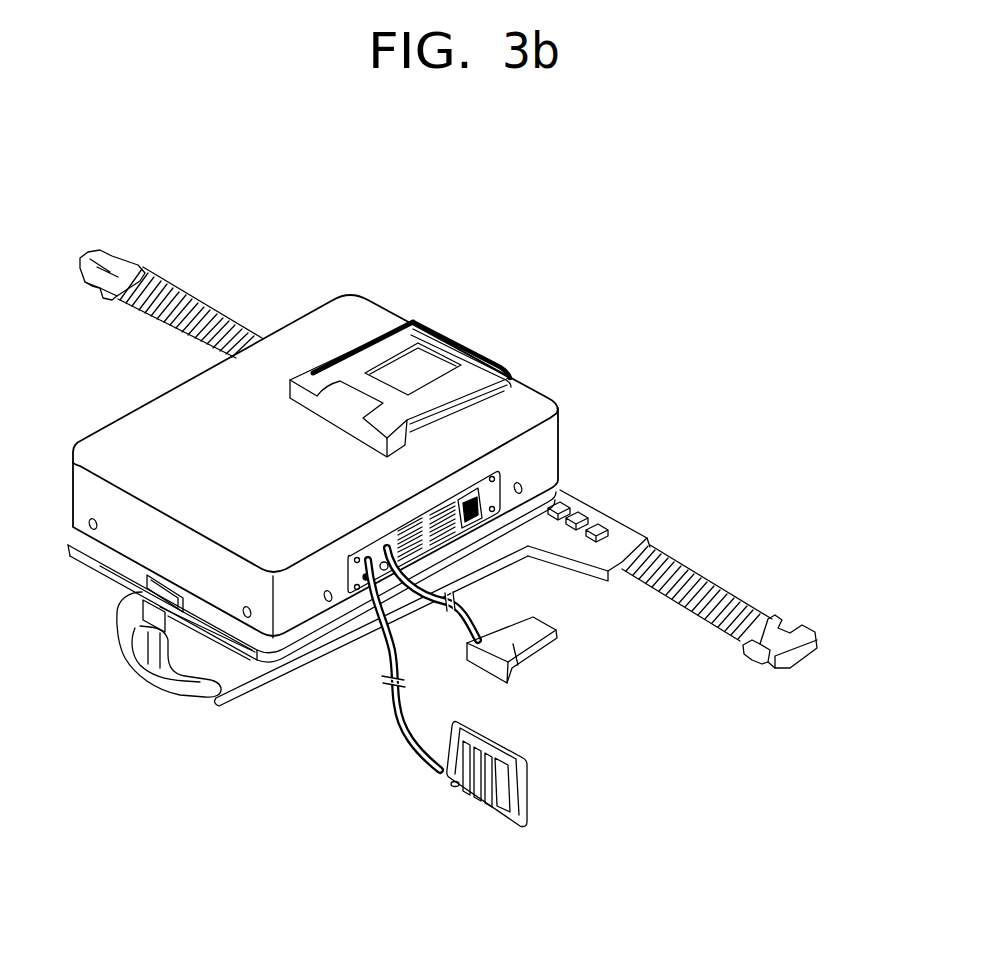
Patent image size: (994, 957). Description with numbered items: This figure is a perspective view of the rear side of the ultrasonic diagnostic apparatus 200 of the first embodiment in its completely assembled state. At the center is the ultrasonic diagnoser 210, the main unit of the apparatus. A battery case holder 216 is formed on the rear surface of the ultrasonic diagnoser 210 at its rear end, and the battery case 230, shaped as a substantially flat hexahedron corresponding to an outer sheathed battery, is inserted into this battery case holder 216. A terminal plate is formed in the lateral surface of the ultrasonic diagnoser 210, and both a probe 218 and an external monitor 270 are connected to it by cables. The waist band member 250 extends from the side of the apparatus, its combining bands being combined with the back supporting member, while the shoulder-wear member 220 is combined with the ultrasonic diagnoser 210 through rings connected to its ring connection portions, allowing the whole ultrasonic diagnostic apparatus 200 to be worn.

The ultrasonic diagnostic apparatus 200 is at (828, 283).
The ultrasonic diagnoser 210 is at (571, 446).
The battery case holder 216 is at (504, 369).
The probe 218 is at (537, 651).
The shoulder-wear member 220 is at (252, 706).
The battery case 230 is at (315, 370).
The waist band member 250 is at (633, 513).
The external monitor 270 is at (518, 777).